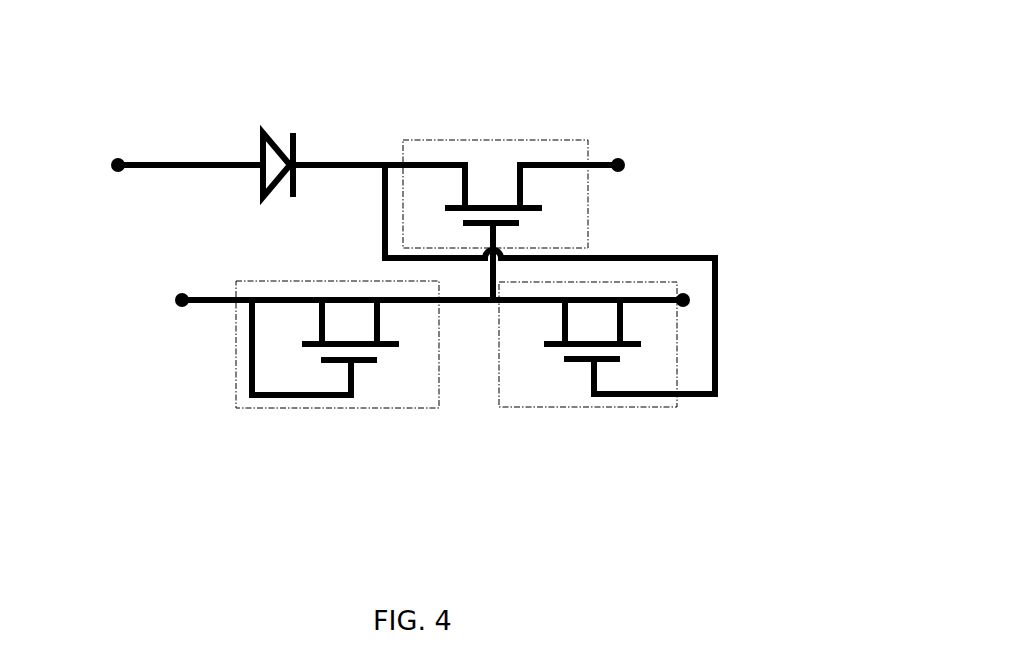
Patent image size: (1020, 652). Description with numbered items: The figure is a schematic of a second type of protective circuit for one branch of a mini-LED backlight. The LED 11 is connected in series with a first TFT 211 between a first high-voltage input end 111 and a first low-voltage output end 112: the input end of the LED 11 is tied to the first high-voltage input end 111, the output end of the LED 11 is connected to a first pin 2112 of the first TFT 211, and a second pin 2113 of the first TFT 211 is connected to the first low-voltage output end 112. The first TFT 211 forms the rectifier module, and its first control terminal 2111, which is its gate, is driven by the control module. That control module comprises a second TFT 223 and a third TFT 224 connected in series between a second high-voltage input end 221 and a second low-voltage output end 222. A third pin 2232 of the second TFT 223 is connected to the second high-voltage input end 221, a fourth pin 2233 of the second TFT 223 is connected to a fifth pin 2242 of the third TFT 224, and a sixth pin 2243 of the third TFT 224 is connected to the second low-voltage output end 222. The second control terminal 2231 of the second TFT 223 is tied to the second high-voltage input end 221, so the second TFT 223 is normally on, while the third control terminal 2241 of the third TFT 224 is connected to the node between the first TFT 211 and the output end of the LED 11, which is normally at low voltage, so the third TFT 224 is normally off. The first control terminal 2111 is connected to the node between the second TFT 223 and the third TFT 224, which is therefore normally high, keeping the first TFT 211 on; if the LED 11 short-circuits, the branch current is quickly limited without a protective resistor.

The LED 11 is at (282, 158).
The first high-voltage input end 111 is at (118, 155).
The first low-voltage output end 112 is at (618, 157).
The first TFT 211 is at (525, 132).
The first control terminal 2111 is at (495, 235).
The first pin 2112 is at (466, 187).
The second pin 2113 is at (522, 185).
The second high-voltage input end 221 is at (182, 308).
The second low-voltage output end 222 is at (683, 292).
The second TFT 223 is at (311, 417).
The second control terminal 2231 is at (389, 377).
The third pin 2232 is at (322, 324).
The fourth pin 2233 is at (378, 325).
The third TFT 224 is at (558, 420).
The third control terminal 2241 is at (592, 385).
The fifth pin 2242 is at (564, 322).
The sixth pin 2243 is at (621, 320).